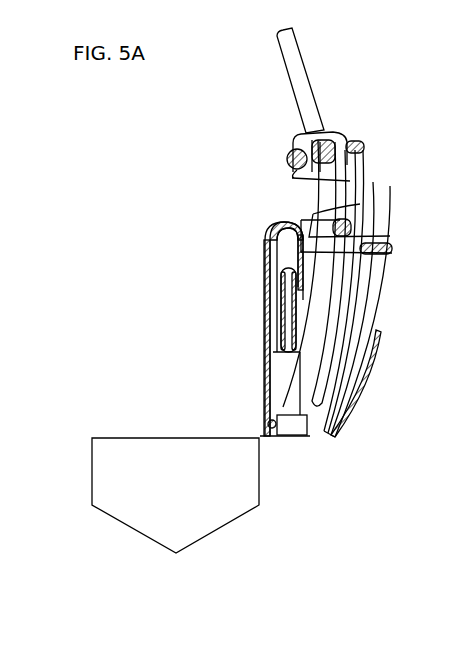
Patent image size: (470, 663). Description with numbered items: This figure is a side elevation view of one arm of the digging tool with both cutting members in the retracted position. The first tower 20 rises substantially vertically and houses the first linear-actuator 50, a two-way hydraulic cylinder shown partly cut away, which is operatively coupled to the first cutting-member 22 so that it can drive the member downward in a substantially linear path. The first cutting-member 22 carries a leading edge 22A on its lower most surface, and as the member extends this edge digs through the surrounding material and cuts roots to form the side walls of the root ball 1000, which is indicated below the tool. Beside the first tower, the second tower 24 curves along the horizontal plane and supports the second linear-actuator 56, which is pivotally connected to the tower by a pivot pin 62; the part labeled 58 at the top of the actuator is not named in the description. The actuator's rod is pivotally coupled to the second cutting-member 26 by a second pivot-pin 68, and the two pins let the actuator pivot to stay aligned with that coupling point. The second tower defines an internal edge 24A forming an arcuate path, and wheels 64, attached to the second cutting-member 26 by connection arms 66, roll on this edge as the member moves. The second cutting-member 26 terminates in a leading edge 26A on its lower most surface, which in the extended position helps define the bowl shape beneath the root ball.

The root ball 1000 is at (197, 487).
The second linear-actuator 56 is at (254, 99).
The rod 58 is at (286, 74).
The pivot pin 62 is at (340, 140).
The second tower 24 is at (290, 151).
The connection arms 66 is at (362, 147).
The wheels 64 is at (350, 181).
The second pivot-pin 68 is at (352, 230).
The edge 24A is at (316, 288).
The second cutting-member 26 is at (387, 312).
The leading edge 26A is at (333, 432).
The first tower 20 is at (272, 228).
The first linear-actuator 50 is at (262, 285).
The first cutting-member 22 is at (263, 310).
The leading edge 22A is at (260, 436).